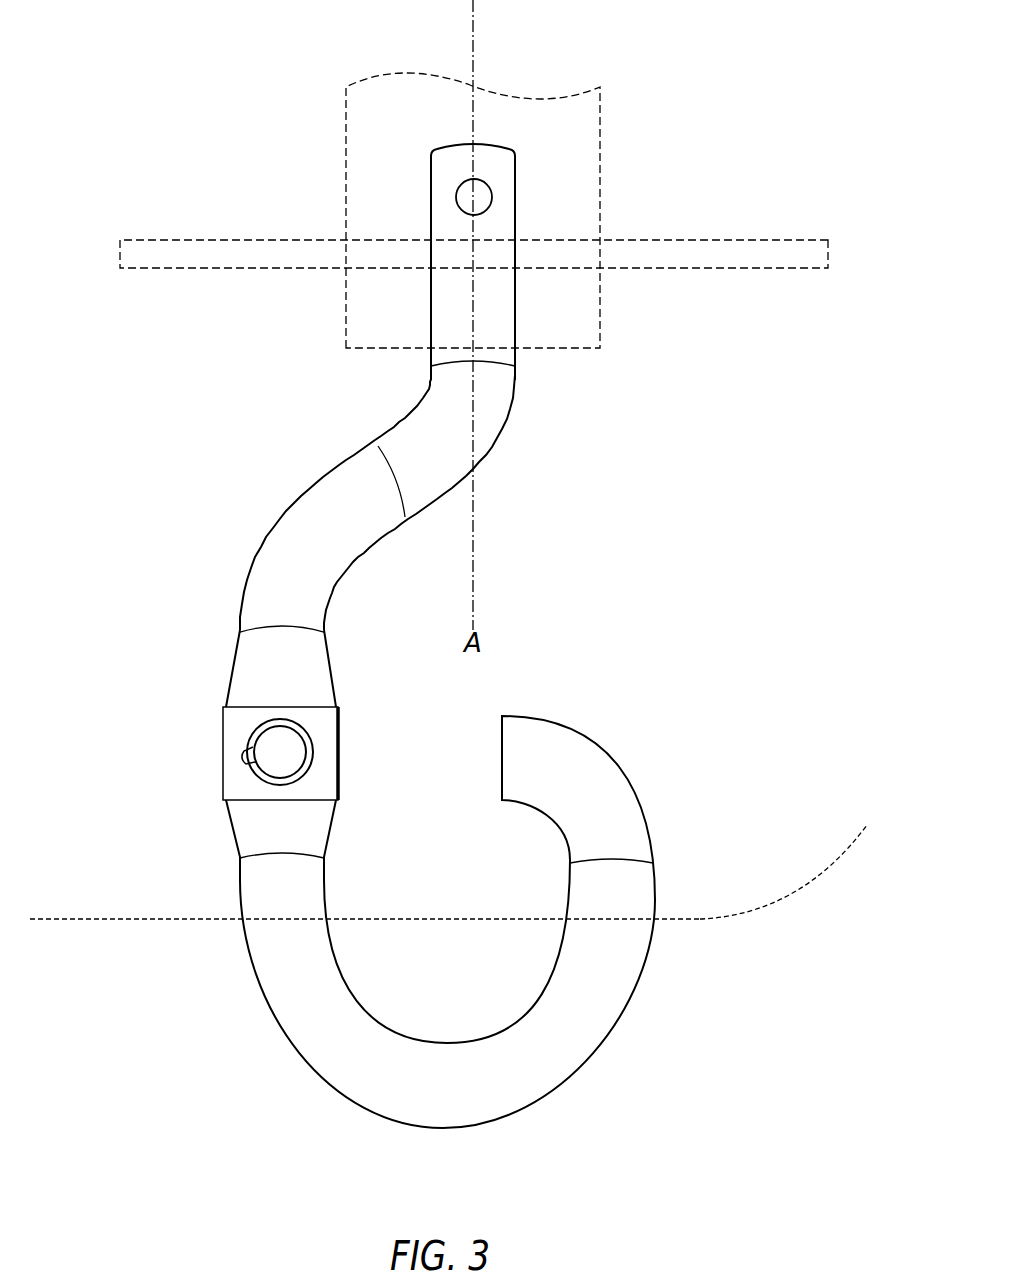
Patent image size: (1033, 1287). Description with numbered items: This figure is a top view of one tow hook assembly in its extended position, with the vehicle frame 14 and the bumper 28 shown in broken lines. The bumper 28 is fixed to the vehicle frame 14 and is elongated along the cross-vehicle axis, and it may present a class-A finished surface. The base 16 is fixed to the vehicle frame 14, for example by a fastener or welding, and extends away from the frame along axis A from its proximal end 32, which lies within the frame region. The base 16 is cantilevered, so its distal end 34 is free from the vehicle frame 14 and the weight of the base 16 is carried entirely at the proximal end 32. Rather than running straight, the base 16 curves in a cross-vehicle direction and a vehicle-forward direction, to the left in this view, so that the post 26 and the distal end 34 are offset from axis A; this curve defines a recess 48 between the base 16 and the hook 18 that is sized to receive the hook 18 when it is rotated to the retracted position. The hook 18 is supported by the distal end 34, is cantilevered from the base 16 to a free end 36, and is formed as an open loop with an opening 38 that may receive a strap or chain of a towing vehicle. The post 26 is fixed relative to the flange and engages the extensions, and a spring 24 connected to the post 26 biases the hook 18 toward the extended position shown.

The vehicle frame 14 is at (600, 135).
The base 16 is at (280, 472).
The hook 18 is at (274, 1046).
The spring 24 is at (265, 778).
The post 26 is at (277, 745).
The bumper 28 is at (803, 887).
The proximal end 32 is at (392, 186).
The distal end 34 is at (205, 727).
The free end 36 is at (448, 1128).
The opening 38 is at (425, 745).
The recess 48 is at (410, 573).